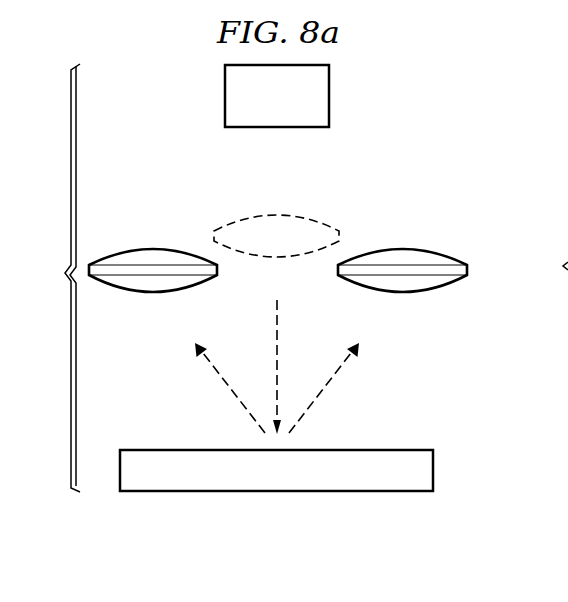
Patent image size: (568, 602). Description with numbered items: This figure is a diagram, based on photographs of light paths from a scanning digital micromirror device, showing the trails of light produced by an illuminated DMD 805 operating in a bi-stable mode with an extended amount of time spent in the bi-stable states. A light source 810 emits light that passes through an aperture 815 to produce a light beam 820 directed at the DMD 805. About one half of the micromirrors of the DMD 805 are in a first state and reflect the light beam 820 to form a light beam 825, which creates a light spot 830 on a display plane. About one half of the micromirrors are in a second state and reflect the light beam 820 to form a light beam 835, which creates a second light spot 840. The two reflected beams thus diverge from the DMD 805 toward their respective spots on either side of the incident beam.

The DMD 805 is at (434, 468).
The light source 810 is at (225, 95).
The aperture 815 is at (267, 215).
The light beam 820 is at (278, 340).
The light beam 825 is at (228, 386).
The light spot 830 is at (150, 249).
The light beam 835 is at (326, 386).
The light spot 840 is at (400, 249).